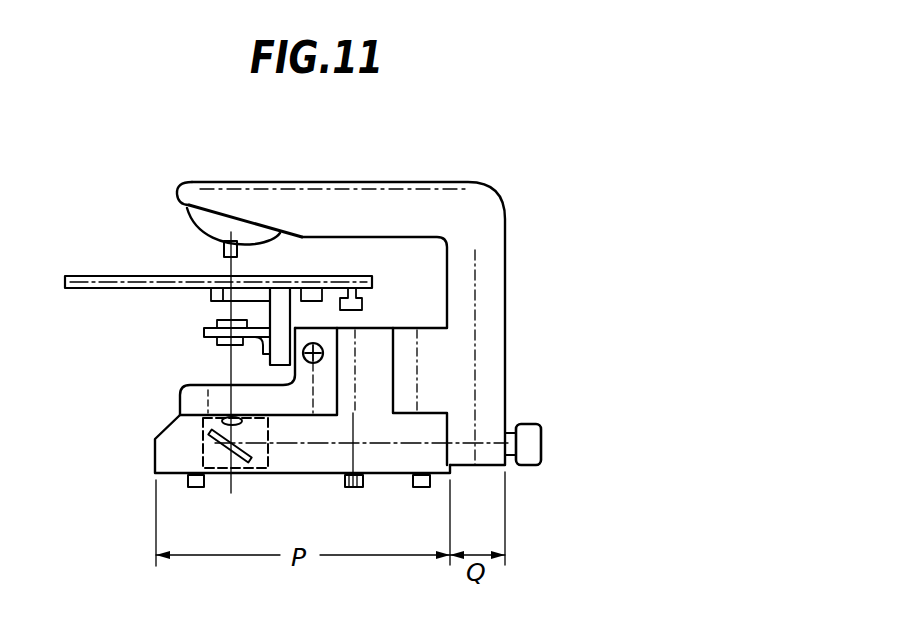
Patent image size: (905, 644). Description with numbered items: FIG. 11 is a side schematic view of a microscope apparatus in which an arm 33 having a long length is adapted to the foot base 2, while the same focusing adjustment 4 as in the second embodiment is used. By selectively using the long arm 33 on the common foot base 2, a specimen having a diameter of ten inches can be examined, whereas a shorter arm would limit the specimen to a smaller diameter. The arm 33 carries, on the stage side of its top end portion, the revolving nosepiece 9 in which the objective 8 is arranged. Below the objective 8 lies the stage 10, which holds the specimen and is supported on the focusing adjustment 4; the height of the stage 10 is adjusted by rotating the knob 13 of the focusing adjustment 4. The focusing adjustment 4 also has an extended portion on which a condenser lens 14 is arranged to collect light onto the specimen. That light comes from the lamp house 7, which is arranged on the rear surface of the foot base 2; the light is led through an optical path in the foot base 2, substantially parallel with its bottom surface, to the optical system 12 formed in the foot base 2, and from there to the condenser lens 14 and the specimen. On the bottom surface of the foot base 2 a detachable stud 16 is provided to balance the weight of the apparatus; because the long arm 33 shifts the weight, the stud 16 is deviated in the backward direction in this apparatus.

The foot base 2 is at (313, 460).
The focusing adjustment 4 is at (188, 398).
The lamp house 7 is at (527, 420).
The objective 8 is at (224, 248).
The revolving nosepiece 9 is at (192, 217).
The stage 10 is at (98, 277).
The optical system 12 is at (203, 452).
The knob 13 is at (324, 358).
The condenser lens 14 is at (216, 324).
The stud 16 is at (362, 486).
The arm 33 is at (481, 201).